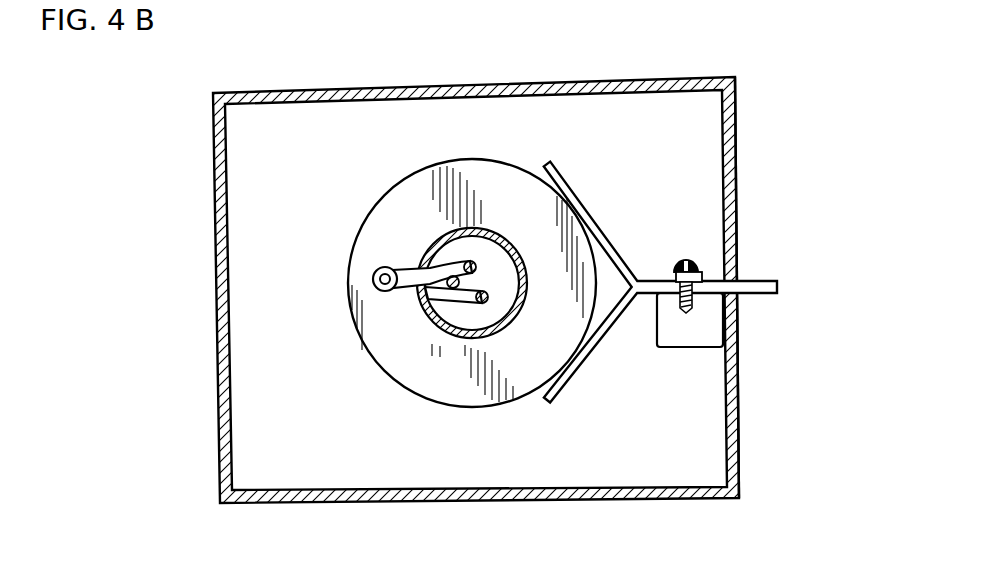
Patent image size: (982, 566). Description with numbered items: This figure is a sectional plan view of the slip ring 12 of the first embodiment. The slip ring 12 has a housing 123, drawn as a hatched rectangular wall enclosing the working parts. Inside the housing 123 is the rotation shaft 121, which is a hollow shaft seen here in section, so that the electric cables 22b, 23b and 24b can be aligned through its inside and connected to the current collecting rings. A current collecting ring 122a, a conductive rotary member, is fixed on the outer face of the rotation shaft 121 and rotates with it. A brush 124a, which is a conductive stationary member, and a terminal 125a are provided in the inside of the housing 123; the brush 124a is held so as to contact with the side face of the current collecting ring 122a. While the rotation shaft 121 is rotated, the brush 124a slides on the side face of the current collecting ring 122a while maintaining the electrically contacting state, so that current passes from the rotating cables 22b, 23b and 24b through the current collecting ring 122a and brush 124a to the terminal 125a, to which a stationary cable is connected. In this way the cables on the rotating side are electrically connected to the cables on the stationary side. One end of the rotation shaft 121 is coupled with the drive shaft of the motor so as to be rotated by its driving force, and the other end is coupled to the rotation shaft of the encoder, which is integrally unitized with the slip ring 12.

The slip ring 12 is at (301, 66).
The rotation shaft 121 is at (500, 226).
The current collecting ring 122a is at (577, 200).
The housing 123 is at (737, 112).
The brush 124a is at (622, 257).
The terminal 125a is at (750, 282).
The electric cable 22b is at (468, 275).
The electric cable 23b is at (478, 300).
The electric cable 24b is at (460, 288).